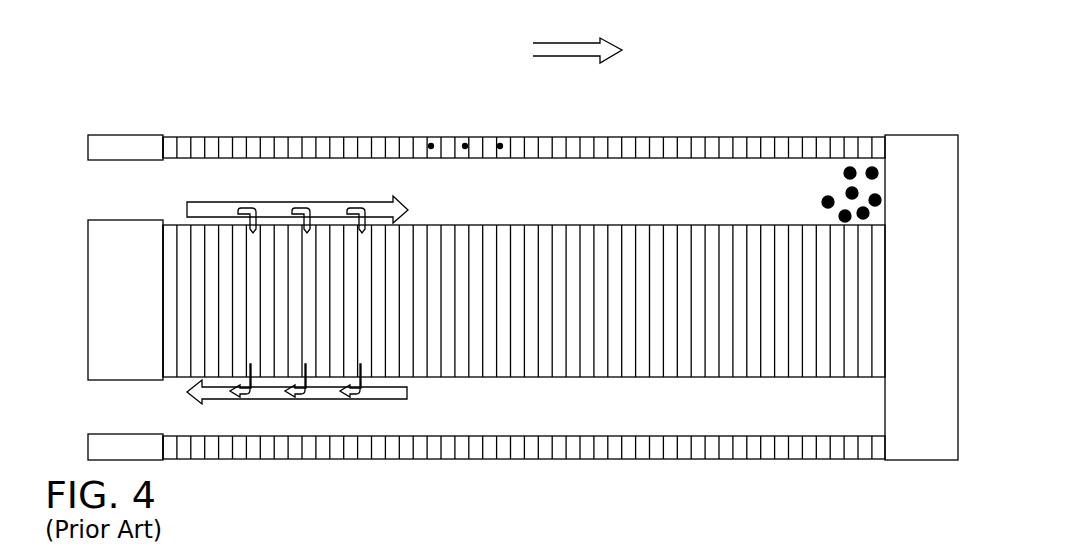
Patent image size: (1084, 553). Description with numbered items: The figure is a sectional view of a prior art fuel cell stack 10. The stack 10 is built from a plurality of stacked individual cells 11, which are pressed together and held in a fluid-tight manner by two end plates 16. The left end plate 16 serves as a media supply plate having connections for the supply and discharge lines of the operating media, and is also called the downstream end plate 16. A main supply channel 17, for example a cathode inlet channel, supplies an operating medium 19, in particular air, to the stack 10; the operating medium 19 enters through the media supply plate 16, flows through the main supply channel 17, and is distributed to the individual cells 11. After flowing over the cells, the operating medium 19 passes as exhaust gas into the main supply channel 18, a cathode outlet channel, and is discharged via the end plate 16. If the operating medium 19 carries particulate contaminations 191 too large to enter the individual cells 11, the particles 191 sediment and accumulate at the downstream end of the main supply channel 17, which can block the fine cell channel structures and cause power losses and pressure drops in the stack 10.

The fuel cell stack 10 is at (311, 100).
The individual cells 11 is at (500, 144).
The end plates 16 is at (110, 147).
The main supply channel 17 is at (612, 205).
The main supply channel 18 is at (623, 413).
The operating medium 19 is at (207, 207).
The particulate contaminations 191 is at (822, 175).